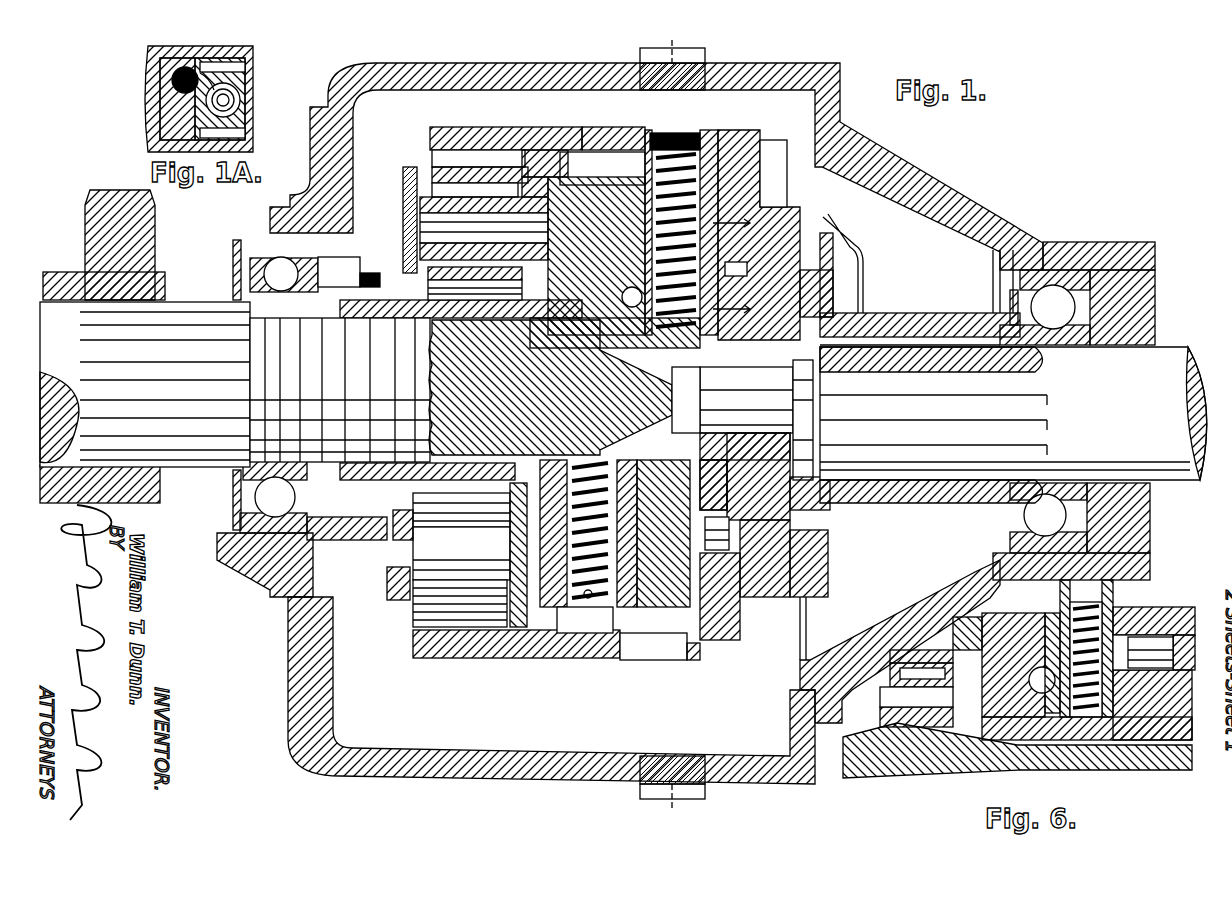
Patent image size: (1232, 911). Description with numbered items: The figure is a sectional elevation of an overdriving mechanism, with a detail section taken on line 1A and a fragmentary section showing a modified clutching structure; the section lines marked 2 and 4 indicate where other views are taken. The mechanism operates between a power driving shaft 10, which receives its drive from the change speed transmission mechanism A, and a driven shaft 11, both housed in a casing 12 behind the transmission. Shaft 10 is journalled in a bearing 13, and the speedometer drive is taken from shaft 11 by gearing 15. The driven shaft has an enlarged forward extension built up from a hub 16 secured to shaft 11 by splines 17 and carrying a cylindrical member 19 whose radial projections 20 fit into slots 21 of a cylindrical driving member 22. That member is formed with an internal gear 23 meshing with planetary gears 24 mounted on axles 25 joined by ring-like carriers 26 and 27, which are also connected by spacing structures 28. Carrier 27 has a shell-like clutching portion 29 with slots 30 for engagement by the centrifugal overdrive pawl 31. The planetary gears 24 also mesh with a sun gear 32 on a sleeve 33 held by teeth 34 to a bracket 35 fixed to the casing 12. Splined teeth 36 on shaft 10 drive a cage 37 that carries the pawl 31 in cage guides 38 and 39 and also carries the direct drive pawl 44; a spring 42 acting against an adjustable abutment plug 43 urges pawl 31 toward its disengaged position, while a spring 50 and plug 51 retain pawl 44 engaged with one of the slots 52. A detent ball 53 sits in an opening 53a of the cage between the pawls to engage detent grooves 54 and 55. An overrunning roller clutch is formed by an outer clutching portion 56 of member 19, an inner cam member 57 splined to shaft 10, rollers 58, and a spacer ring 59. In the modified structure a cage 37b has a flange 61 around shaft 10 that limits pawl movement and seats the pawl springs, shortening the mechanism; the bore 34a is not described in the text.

In FIG. 1, the section line / filler plug 2 is at (648, 56).
In FIG. 1, the section line 4 is at (741, 268).
In FIG. 1, the power driving shaft 10 is at (345, 518).
In FIG. 6, the power driving shaft 10 is at (920, 745).
In FIG. 1, the driven shaft 11 is at (1165, 355).
In FIG. 1, the casing 12 is at (430, 778).
In FIG. 1, the bearing 13 is at (262, 268).
In FIG. 1, the gearing 15 is at (955, 507).
In FIG. 1, the hub 16 is at (870, 295).
In FIG. 1, the splines or teeth 17 is at (895, 505).
In FIG. 1, the cylindrical member 19 is at (830, 215).
In FIG. 6, the cylindrical member 19 is at (1195, 603).
In FIG. 1, the radial projections 20 is at (745, 128).
In FIG. 1, the slots 21 is at (782, 152).
In FIG. 1, the cylindrical driving member 22 is at (608, 112).
In FIG. 1, the internal gear 23 is at (475, 110).
In FIG. 1, the planetary gears 24 is at (410, 167).
In FIG. 6, the planetary gears 24 is at (895, 683).
In FIG. 1, the axles 25 is at (484, 228).
In FIG. 6, the axles 25 is at (890, 657).
In FIG. 1, the ring-like carrier 26 is at (403, 175).
In FIG. 1, the ring-like carrier 27 is at (540, 150).
In FIG. 1, the spacing structures 28 is at (387, 592).
In FIG. 1, the shell-like clutching portion 29 is at (650, 110).
In FIG. 1, the slots 30 is at (590, 660).
In FIG. 1, the clutching element or pawl 31 is at (596, 256).
In FIG. 1A, the clutching element or pawl 31 is at (160, 92).
In FIG. 6, the clutching element or pawl 31 is at (1015, 614).
In FIG. 1, the sun gear 32 is at (445, 530).
In FIG. 1, the sleeve 33 is at (360, 338).
In FIG. 6, the sleeve 33 is at (885, 727).
In FIG. 1, the teeth 34 is at (372, 285).
In FIG. 1, the bore 34a is at (608, 221).
In FIG. 1, the bracket 35 is at (290, 575).
In FIG. 1, the splined teeth 36 is at (720, 385).
In FIG. 6, the splined teeth 36 is at (1000, 745).
In FIG. 1, the cage 37 is at (560, 330).
In FIG. 1A, the cage 37 is at (152, 138).
In FIG. 6, the modified cage structure 37b is at (1050, 700).
In FIG. 1, the cage guide 38 is at (540, 228).
In FIG. 1, the cage guide 39 is at (643, 540).
In FIG. 1, the spring 42 is at (604, 455).
In FIG. 1, the abutment plug 43 is at (555, 645).
In FIG. 1, the direct drive pawl 44 is at (695, 118).
In FIG. 1A, the direct drive pawl 44 is at (258, 76).
In FIG. 6, the direct drive pawl 44 is at (1082, 717).
In FIG. 1, the spring 50 is at (712, 268).
In FIG. 1A, the spring 50 is at (240, 108).
In FIG. 6, the spring 50 is at (1085, 600).
In FIG. 1, the abutment plug 51 is at (665, 133).
In FIG. 1, the slots 52 is at (635, 658).
In FIG. 1, the detent ball 53 is at (616, 285).
In FIG. 1A, the detent ball 53 is at (172, 76).
In FIG. 6, the detent ball 53 is at (1030, 670).
In FIG. 1, the opening 53a is at (640, 330).
In FIG. 1, the detent groove 54 is at (602, 243).
In FIG. 1A, the detent groove 54 is at (245, 95).
In FIG. 6, the detent groove 54 is at (1052, 613).
In FIG. 1A, the detent groove 55 is at (160, 112).
In FIG. 6, the detent groove 55 is at (1160, 622).
In FIG. 1, the outer clutching portion 56 is at (800, 615).
In FIG. 1, the inner cam member 57 is at (755, 415).
In FIG. 6, the inner cam member 57 is at (1150, 745).
In FIG. 1, the rollers 58 is at (713, 485).
In FIG. 6, the rollers 58 is at (1150, 652).
In FIG. 6, the spacer ring 59 is at (1130, 620).
In FIG. 6, the flange 61 is at (1030, 745).
In FIG. 1, the change speed transmission mechanism A is at (158, 240).
In FIG. 1, the bearing detail 1A is at (1045, 242).